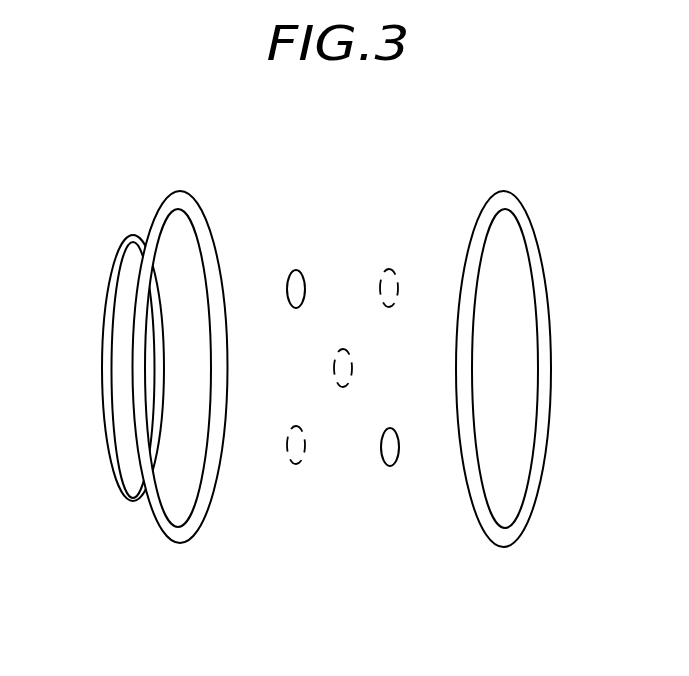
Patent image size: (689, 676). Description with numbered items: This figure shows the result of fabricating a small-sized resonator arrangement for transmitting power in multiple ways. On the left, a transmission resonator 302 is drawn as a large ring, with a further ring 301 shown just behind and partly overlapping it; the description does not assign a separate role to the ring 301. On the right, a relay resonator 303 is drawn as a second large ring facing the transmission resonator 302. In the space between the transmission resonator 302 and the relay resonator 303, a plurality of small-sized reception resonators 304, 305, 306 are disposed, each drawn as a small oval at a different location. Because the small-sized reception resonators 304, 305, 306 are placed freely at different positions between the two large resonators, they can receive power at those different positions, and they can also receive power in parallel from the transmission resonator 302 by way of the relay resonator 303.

The first ring (rear toroidal coil/ring) 301 is at (114, 471).
The transmission resonator 302 is at (178, 545).
The relay resonator 303 is at (503, 547).
The small-sized reception resonator 304 is at (296, 464).
The small-sized reception resonator 305 is at (296, 270).
The small-sized reception resonator 306 is at (390, 466).